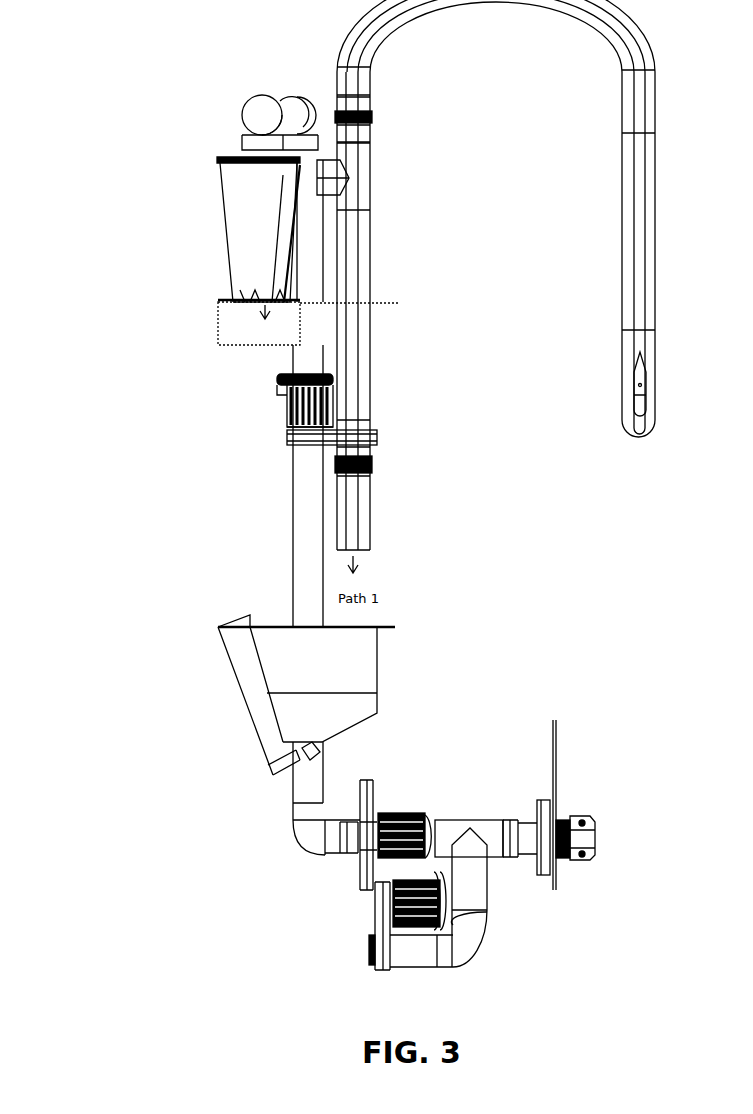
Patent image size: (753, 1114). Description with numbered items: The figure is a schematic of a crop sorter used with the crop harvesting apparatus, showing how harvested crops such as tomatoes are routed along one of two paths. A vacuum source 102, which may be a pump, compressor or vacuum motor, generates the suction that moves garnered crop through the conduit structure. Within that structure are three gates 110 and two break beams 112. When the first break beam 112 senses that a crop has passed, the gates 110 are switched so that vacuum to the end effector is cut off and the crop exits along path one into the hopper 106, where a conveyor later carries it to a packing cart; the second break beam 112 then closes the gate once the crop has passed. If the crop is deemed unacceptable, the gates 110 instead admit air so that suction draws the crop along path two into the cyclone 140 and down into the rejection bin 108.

The vacuum source 102 is at (557, 803).
The hopper 106 is at (380, 660).
The rejection bin 108 is at (218, 318).
The gates 110 is at (368, 785).
The break beams 112 is at (372, 117).
The cyclone 140 is at (229, 240).